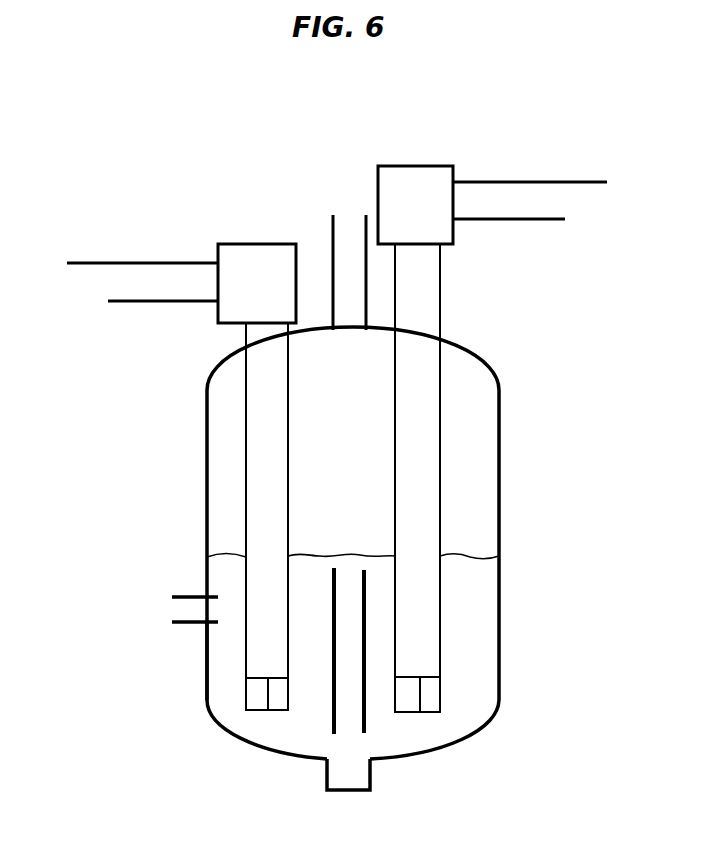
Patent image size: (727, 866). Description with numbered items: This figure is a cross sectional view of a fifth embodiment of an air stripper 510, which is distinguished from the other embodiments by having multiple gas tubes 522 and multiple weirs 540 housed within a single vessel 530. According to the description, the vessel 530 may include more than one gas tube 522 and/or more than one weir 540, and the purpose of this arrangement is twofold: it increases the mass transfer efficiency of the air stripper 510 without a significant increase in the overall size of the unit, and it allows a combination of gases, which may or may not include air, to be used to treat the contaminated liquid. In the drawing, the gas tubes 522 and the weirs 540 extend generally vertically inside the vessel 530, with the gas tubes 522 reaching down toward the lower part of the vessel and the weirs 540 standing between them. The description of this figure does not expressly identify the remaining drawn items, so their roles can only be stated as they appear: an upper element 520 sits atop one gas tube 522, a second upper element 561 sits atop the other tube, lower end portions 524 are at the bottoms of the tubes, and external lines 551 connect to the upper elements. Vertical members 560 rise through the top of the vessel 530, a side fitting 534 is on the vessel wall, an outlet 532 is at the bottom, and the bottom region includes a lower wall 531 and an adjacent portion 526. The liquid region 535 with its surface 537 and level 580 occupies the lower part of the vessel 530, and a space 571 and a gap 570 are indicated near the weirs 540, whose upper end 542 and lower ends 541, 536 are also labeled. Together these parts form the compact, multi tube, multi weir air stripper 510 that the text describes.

The air stripper 510 is at (180, 524).
The first electrode holder 520 is at (228, 307).
The gas tube 522 is at (260, 440).
The electrode tip 524 is at (245, 696).
The bottom wall of vessel 526 is at (255, 710).
The vessel 530 is at (500, 398).
The bottom portion of vessel 531 is at (410, 760).
The outlet 532 is at (337, 775).
The side port 534 is at (172, 621).
The liquid 535 is at (490, 573).
The lower end of tube 536 is at (333, 738).
The liquid surface 537 is at (320, 562).
The weir 540 is at (335, 673).
The tube lower end 541 is at (333, 738).
The tube upper end 542 is at (335, 568).
The fluid lines 551 is at (113, 303).
The vent pipes 560 is at (342, 227).
The second electrode shaft 561 is at (442, 370).
The gap 570 is at (315, 715).
The liquid region 571 is at (478, 630).
The liquid level 580 is at (457, 552).